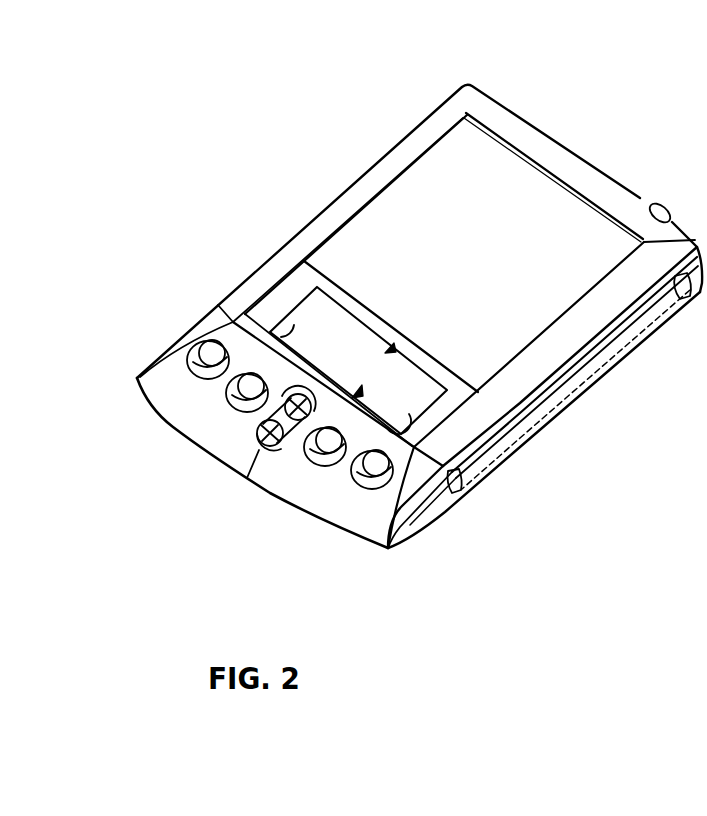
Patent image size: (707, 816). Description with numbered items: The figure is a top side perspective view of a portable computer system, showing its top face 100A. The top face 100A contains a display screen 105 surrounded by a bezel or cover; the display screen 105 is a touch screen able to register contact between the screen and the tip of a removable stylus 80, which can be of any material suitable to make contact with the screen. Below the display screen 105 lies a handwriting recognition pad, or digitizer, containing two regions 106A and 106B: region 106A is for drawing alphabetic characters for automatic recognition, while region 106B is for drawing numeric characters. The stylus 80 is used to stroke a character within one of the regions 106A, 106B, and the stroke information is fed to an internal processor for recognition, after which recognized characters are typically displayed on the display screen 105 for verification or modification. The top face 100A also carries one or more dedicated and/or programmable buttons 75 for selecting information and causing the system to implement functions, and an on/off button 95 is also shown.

The top face 100A is at (246, 106).
The display screen 105 is at (473, 193).
The region 106A is at (361, 348).
The region 106B is at (429, 395).
The buttons 75 is at (212, 352).
The stylus 80 is at (582, 373).
The on/off button 95 is at (661, 205).